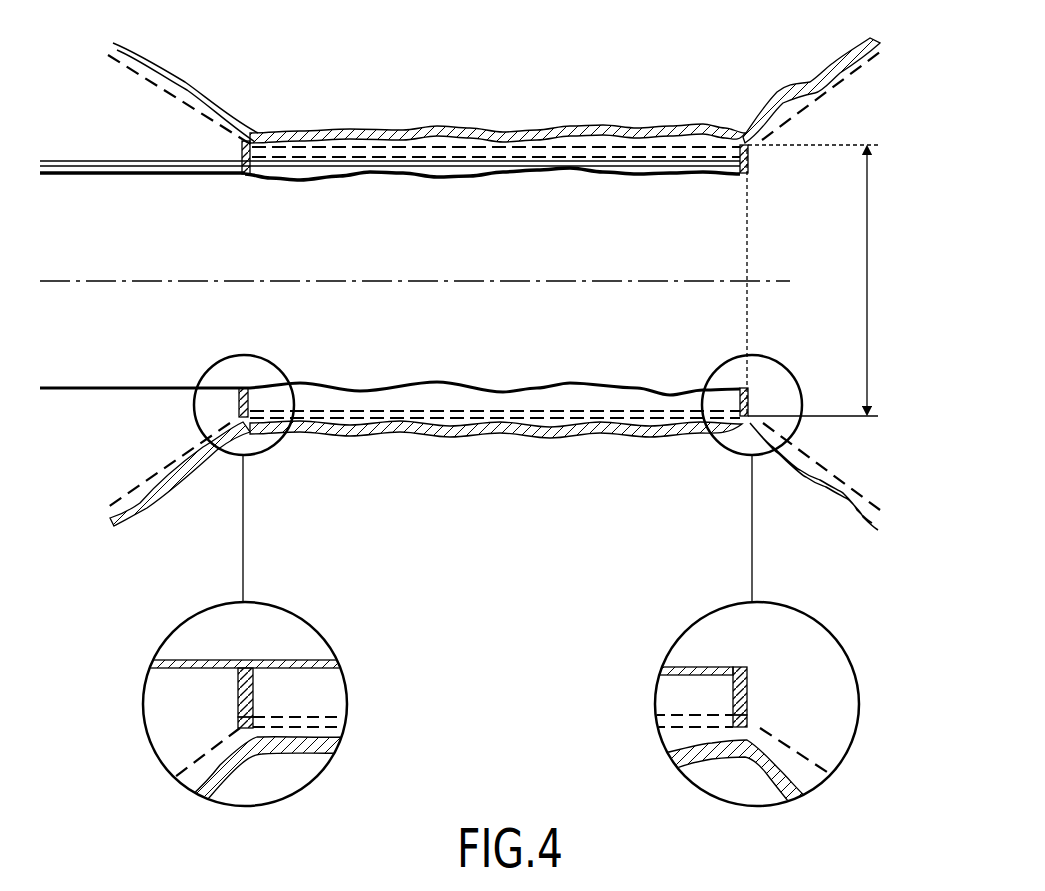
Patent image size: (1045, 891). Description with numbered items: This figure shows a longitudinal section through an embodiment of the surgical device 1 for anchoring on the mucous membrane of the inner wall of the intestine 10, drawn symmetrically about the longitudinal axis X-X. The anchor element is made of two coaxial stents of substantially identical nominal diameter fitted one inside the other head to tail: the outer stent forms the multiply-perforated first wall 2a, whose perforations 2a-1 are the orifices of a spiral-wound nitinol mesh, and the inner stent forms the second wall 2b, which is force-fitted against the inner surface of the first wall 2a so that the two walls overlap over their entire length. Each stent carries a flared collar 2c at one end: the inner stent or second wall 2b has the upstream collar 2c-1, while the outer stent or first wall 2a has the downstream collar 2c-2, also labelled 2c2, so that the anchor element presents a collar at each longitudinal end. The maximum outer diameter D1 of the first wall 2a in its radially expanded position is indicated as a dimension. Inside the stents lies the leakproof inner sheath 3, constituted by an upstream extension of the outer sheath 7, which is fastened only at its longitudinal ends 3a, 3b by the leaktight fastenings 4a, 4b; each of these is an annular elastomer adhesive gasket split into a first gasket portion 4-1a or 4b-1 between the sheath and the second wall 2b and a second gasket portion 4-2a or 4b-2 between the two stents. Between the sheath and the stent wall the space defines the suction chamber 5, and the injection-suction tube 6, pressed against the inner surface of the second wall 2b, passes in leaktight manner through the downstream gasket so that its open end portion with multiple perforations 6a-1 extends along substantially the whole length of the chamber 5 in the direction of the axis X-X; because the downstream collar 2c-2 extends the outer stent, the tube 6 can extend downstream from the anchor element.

The surgical device 1 is at (882, 379).
The first wall 2a is at (610, 142).
The multiple perforations 2a-1 is at (467, 145).
The second wall 2b is at (567, 156).
The collar 2c is at (494, 415).
The upstream collar 2c-1 is at (818, 98).
The downstream collar 2c-2 is at (192, 762).
The downstream collar 2c2 is at (160, 86).
The inner sheath 3 is at (437, 383).
The upstream longitudinal end of inner sheath 3a is at (735, 388).
The downstream longitudinal end of inner sheath 3b is at (250, 177).
The leaktight fastening 4a is at (750, 393).
The leaktight fastening 4b is at (243, 392).
The first annular gasket portion 4b-1 is at (242, 687).
The second annular gasket portion 4b-2 is at (240, 723).
The first annular gasket portion 4-1a is at (743, 680).
The second annular gasket portion 4-2a is at (748, 727).
The suction chamber 5 is at (650, 165).
The injection-suction tube 6 is at (118, 160).
The multiple perforations 6a-1 is at (555, 161).
The outer sheath 7 is at (103, 385).
The intestine 10 is at (593, 426).
The maximum outer diameter D1 is at (823, 280).
The longitudinal axis X-X is at (415, 257).